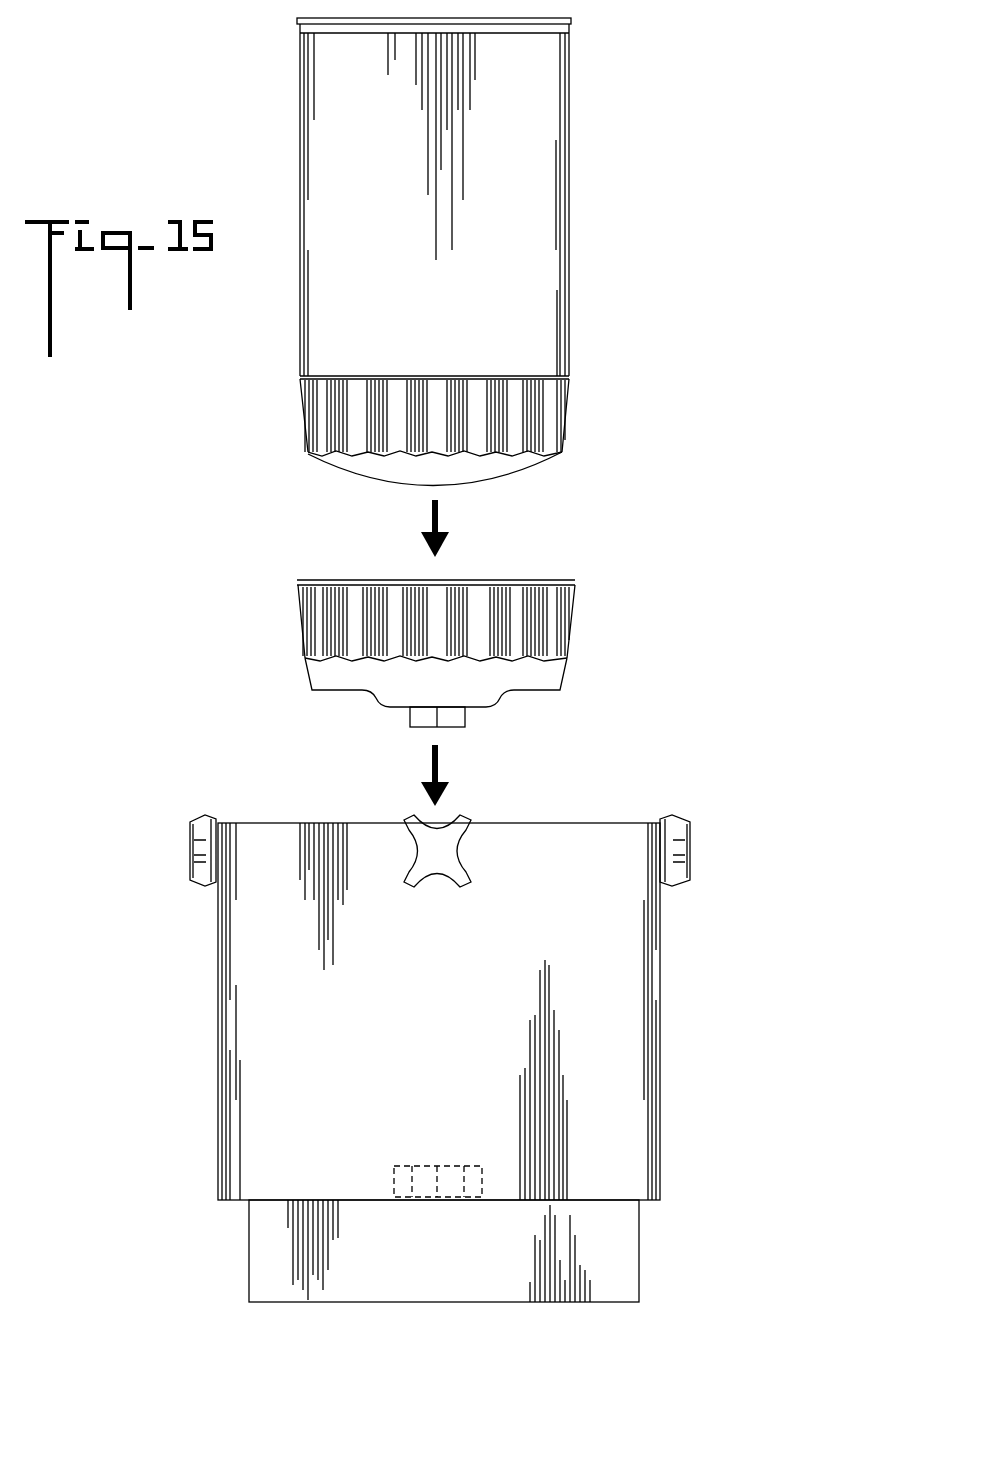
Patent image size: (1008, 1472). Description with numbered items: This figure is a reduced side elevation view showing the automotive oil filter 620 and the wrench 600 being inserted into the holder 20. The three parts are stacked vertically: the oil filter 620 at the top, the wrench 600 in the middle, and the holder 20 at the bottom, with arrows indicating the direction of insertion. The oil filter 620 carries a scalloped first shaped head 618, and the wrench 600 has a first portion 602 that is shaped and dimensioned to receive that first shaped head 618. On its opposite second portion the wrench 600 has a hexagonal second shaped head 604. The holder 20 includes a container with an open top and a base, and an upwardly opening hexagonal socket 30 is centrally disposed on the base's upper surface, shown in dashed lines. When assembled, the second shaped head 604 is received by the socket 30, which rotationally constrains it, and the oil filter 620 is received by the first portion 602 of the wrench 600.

The automotive oil filter 620 is at (445, 252).
The first shaped head 618 is at (356, 422).
The automotive oil filter wrench 600 is at (464, 641).
The first portion 602 is at (337, 606).
The second shaped head 604 is at (452, 728).
The holder 20 is at (384, 1043).
The socket 30 is at (462, 1166).